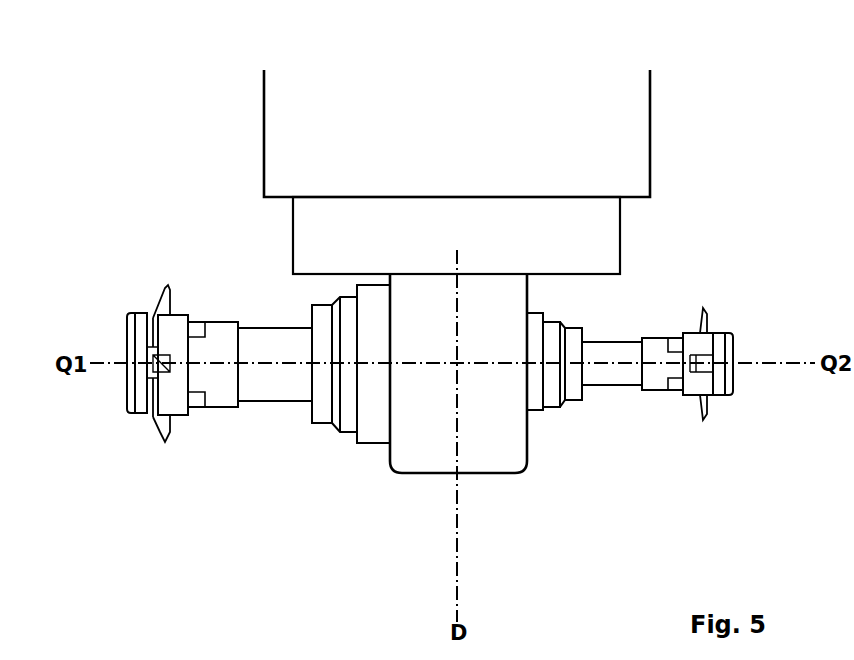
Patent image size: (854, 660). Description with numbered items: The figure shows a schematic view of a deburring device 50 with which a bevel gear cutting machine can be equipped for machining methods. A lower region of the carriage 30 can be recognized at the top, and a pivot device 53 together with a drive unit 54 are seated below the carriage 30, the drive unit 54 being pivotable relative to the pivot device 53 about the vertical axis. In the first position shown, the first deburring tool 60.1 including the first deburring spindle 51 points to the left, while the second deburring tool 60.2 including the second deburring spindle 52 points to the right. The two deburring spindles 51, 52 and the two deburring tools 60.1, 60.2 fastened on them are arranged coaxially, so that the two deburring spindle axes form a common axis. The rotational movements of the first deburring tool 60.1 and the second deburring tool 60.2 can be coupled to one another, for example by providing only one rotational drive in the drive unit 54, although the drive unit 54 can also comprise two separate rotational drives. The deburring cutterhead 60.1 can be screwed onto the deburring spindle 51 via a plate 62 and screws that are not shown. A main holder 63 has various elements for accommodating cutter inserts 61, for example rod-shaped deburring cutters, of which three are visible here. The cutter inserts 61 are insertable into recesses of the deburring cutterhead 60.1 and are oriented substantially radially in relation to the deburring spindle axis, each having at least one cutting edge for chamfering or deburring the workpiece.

The carriage 30 is at (614, 99).
The deburring device 50 is at (175, 28).
The first deburring spindle 51 is at (323, 416).
The second deburring spindle 52 is at (575, 396).
The pivot device 53 is at (593, 227).
The drive unit 54 is at (498, 463).
The first deburring tool 60.1 is at (121, 286).
The second deburring tool 60.2 is at (750, 316).
The cutter inserts 61 is at (168, 286).
The plate 62 is at (140, 411).
The main holder 63 is at (223, 404).